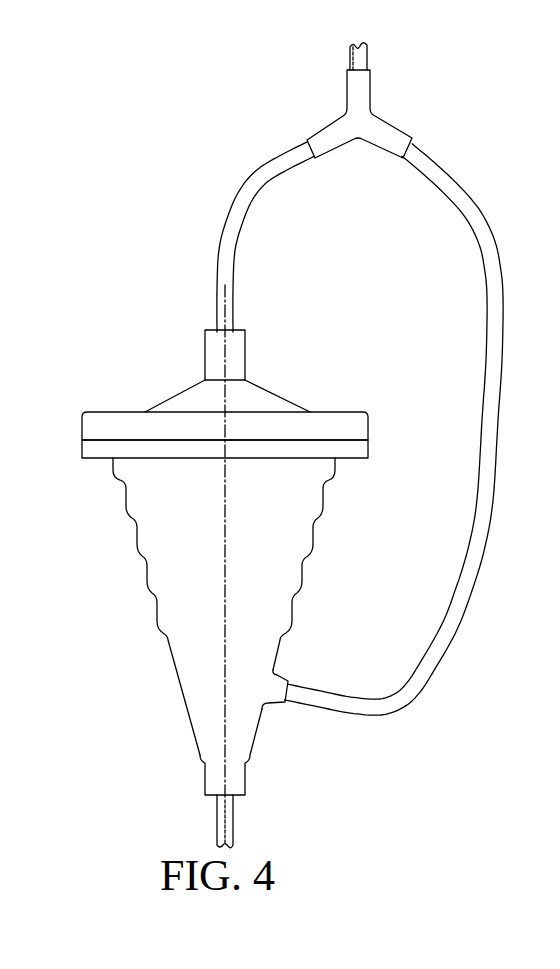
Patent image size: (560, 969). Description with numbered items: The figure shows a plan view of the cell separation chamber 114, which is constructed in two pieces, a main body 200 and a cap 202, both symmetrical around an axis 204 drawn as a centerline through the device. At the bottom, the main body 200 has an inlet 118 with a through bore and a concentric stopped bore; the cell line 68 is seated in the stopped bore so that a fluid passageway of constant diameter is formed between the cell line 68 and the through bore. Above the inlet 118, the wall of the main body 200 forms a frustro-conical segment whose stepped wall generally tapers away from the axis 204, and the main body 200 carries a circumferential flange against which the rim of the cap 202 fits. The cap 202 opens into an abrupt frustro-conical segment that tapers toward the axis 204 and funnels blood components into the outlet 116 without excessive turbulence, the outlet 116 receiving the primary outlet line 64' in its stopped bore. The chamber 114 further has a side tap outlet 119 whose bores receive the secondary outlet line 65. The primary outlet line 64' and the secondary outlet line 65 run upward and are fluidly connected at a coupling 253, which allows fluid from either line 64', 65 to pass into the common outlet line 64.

The common outlet line 64 is at (384, 65).
The coupling 253 is at (395, 128).
The primary outlet line 64' is at (251, 237).
The secondary outlet line 65 is at (495, 242).
The axis 204 is at (226, 307).
The cell separation chamber 114 is at (374, 343).
The outlet 116 is at (245, 355).
The cap 202 is at (163, 402).
The main body 200 is at (135, 532).
The side tap outlet 119 is at (282, 675).
The inlet 118 is at (247, 778).
The cell line 68 is at (235, 823).